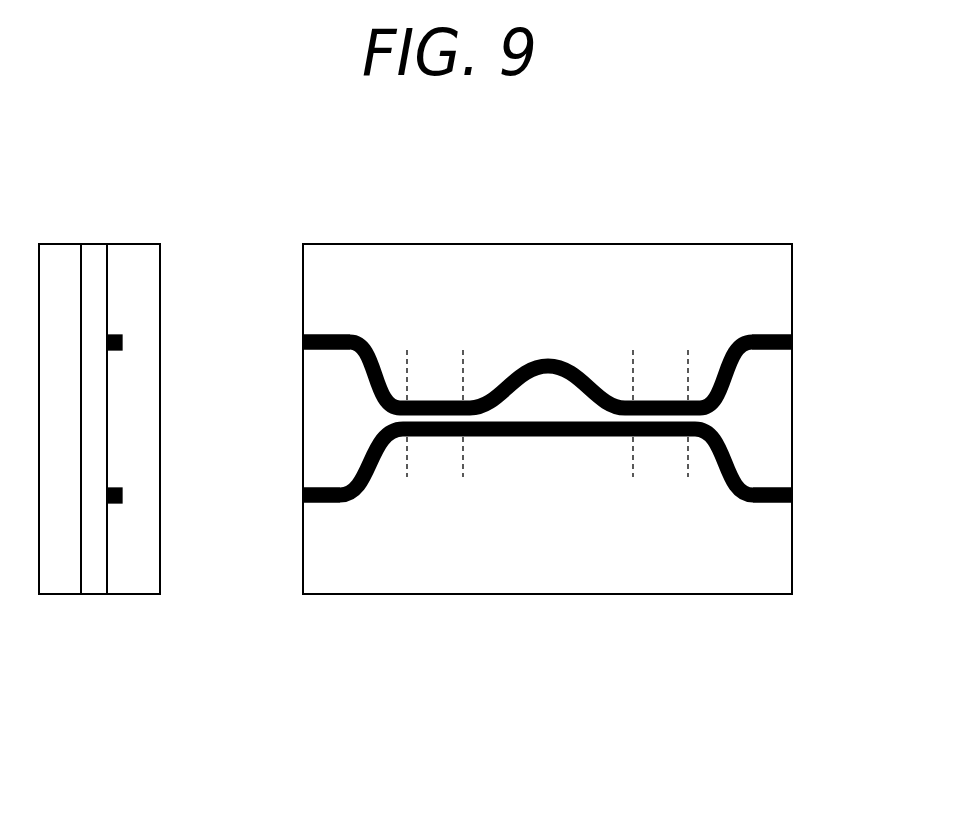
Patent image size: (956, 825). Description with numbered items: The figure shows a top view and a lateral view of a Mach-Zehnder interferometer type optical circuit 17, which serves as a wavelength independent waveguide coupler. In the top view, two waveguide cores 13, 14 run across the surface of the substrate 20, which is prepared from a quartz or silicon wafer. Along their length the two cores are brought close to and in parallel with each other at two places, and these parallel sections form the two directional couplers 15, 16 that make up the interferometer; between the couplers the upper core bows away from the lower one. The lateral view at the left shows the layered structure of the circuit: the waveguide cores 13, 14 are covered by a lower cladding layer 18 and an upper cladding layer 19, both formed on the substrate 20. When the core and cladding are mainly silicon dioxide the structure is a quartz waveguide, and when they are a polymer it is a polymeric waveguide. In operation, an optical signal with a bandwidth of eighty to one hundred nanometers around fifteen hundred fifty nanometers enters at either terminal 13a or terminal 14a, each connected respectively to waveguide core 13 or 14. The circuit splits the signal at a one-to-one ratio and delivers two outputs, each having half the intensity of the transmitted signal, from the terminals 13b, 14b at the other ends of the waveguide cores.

The waveguide core 13 is at (549, 350).
The terminal 13a is at (300, 342).
The terminal 13b is at (793, 343).
The waveguide core 14 is at (546, 443).
The terminal 14a is at (300, 495).
The terminal 14b is at (793, 495).
The directional coupler 15 is at (434, 388).
The directional coupler 16 is at (656, 388).
The Mach-Zehnder interferometer type optical circuit 17 is at (531, 595).
The lower cladding layer 18 is at (89, 585).
The upper cladding layer 19 is at (132, 585).
The substrate 20 is at (57, 585).